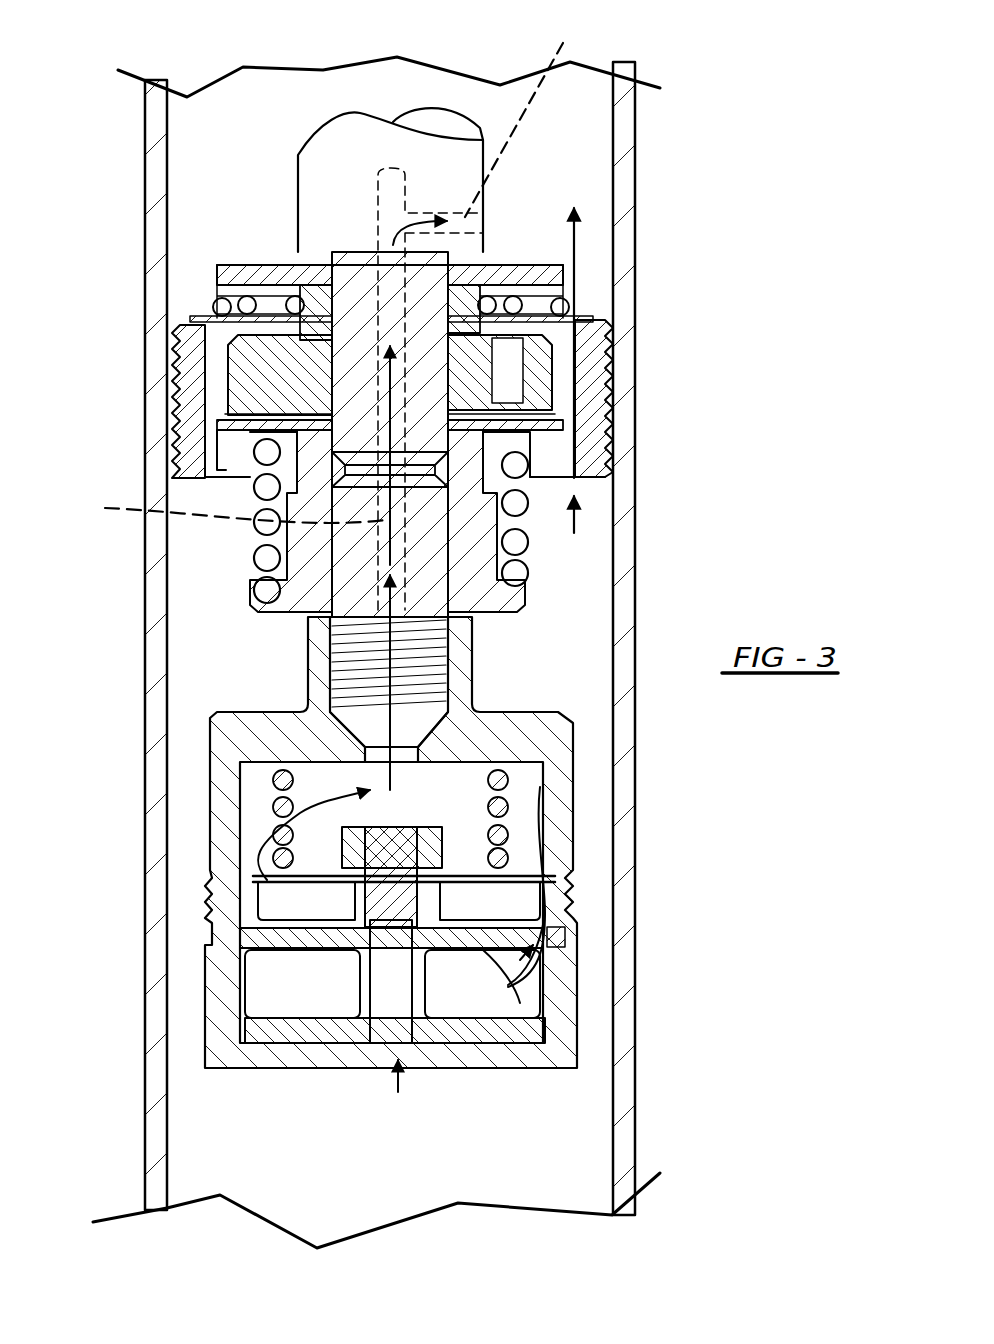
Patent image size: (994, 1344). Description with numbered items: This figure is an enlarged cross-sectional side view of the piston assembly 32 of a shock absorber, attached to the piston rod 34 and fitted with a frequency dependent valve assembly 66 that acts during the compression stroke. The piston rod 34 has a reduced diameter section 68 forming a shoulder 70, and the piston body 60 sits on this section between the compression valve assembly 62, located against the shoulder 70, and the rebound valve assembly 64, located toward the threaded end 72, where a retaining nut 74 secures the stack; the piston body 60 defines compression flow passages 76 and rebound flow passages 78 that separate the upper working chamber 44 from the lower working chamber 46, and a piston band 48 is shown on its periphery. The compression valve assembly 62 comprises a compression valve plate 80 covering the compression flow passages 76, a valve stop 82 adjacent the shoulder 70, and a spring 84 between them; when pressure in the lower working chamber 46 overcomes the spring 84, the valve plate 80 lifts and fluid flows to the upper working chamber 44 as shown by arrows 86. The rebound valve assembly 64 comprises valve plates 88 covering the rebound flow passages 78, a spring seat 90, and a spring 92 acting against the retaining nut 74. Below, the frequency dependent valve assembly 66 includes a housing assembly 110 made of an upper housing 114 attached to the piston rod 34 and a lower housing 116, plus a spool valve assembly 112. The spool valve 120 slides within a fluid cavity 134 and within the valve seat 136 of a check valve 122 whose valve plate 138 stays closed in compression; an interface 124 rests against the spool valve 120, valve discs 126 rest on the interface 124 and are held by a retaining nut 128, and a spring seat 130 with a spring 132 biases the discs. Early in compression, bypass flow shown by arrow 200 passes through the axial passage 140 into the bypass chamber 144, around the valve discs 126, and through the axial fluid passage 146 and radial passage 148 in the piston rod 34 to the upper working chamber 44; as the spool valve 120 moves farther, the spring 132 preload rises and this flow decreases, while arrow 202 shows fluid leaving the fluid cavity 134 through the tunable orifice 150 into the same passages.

The piston assembly 32 is at (135, 190).
The piston rod 34 is at (437, 130).
The upper working chamber 44 is at (580, 117).
The lower working chamber 46 is at (237, 1137).
The piston body 48 is at (610, 388).
The piston body 60 is at (590, 377).
The compression valve assembly 62 is at (593, 240).
The rebound valve assembly 64 is at (215, 550).
The frequency dependent valve assembly 66 is at (190, 900).
The reduced diameter section 68 is at (353, 382).
The shoulder 70 is at (343, 267).
The threaded end 72 is at (423, 660).
The retaining nut 74 is at (273, 610).
The compression flow passages 76 is at (215, 397).
The rebound flow passages 78 is at (512, 355).
The compression valve plate 80 is at (190, 318).
The valve stop 82 is at (233, 272).
The spring 84 is at (222, 307).
The arrows 86 is at (578, 263).
The valve plates 88 is at (550, 413).
The spring seat 90 is at (527, 477).
The spring 92 is at (527, 570).
The housing assembly 110 is at (590, 844).
The spool valve assembly 112 is at (193, 1028).
The upper housing 114 is at (550, 735).
The lower housing 116 is at (560, 1033).
The spool valve 120 is at (470, 1040).
The check valve 122 is at (270, 977).
The interface 124 is at (540, 908).
The valve discs 126 is at (540, 882).
The retaining nut 128 is at (425, 838).
The spring seat 130 is at (270, 858).
The spring 132 is at (285, 782).
The fluid cavity 134 is at (303, 995).
The valve seat 136 is at (545, 938).
The valve plate 138 is at (483, 950).
The axial passage 140 is at (383, 1030).
The bypass chamber 144 is at (273, 903).
The axial fluid passage 146 is at (223, 507).
The radial passage 148 is at (482, 312).
The tunable orifice 150 is at (508, 985).
The arrow 200 is at (365, 792).
The arrow 202 is at (540, 787).